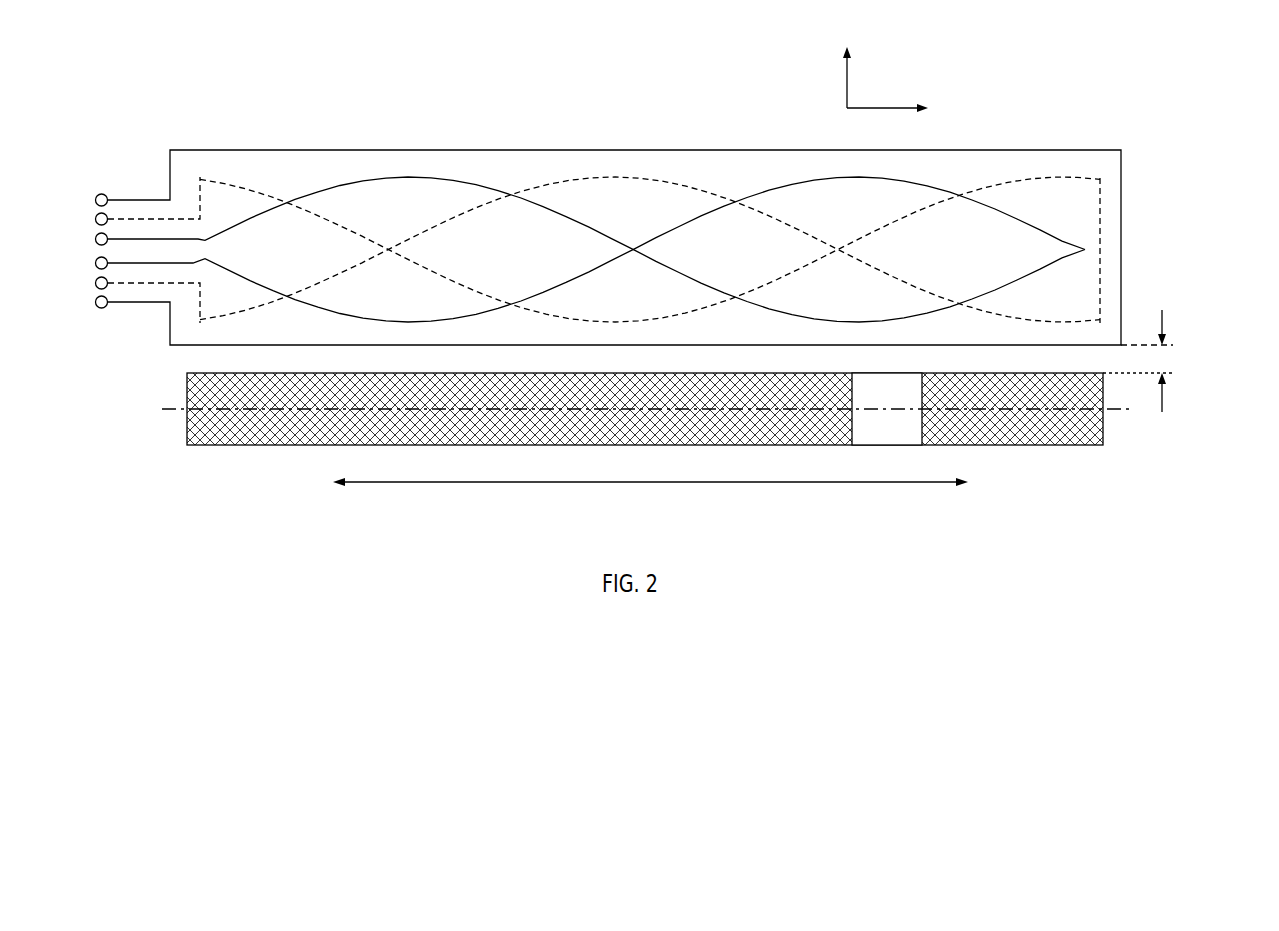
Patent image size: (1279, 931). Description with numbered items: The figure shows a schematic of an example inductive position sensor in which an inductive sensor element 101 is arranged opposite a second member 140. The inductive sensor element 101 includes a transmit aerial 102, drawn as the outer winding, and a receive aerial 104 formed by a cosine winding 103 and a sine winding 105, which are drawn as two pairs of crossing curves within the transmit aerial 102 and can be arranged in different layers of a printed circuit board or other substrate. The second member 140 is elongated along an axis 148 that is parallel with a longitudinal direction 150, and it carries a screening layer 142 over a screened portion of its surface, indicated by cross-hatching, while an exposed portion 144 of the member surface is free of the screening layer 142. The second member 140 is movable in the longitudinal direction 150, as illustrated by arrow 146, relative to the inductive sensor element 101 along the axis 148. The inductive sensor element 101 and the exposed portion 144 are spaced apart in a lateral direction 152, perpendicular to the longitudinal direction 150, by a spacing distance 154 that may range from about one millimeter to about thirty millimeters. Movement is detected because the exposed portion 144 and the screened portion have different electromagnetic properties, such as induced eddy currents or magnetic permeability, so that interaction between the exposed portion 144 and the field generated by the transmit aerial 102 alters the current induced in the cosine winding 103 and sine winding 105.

The inductive sensor element 101 is at (186, 113).
The transmit aerial 102 is at (170, 167).
The cosine winding 103 is at (222, 178).
The receive aerial 104 is at (332, 75).
The sine winding 105 is at (256, 212).
The second member 140 is at (187, 383).
The screening layer 142 is at (597, 452).
The exposed portion 144 is at (880, 445).
The arrow 146 is at (385, 483).
The axis 148 is at (1123, 410).
The longitudinal direction 150 is at (907, 109).
The lateral direction 152 is at (838, 64).
The spacing distance 154 is at (1162, 388).